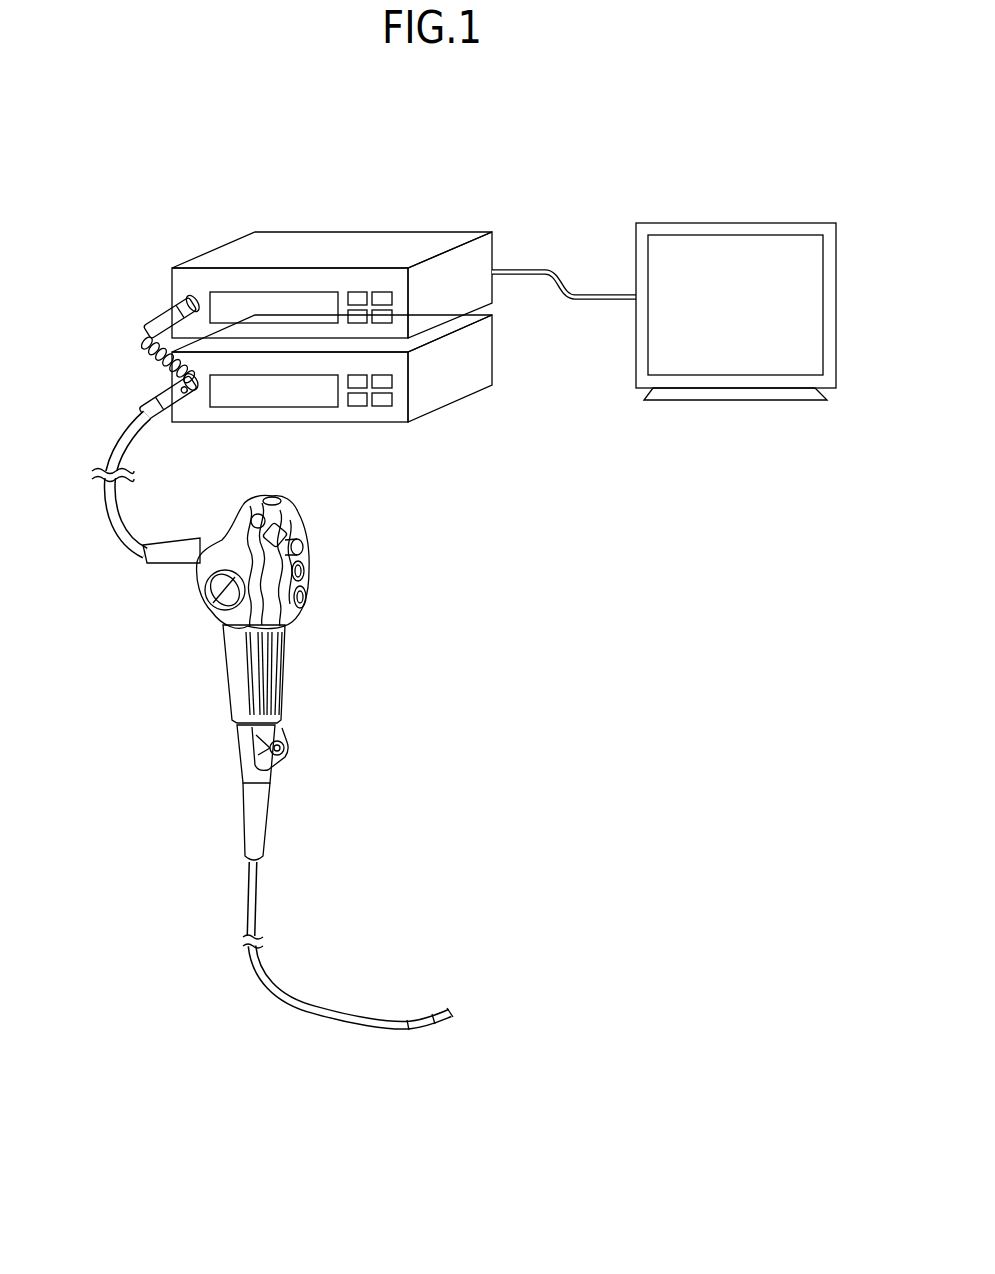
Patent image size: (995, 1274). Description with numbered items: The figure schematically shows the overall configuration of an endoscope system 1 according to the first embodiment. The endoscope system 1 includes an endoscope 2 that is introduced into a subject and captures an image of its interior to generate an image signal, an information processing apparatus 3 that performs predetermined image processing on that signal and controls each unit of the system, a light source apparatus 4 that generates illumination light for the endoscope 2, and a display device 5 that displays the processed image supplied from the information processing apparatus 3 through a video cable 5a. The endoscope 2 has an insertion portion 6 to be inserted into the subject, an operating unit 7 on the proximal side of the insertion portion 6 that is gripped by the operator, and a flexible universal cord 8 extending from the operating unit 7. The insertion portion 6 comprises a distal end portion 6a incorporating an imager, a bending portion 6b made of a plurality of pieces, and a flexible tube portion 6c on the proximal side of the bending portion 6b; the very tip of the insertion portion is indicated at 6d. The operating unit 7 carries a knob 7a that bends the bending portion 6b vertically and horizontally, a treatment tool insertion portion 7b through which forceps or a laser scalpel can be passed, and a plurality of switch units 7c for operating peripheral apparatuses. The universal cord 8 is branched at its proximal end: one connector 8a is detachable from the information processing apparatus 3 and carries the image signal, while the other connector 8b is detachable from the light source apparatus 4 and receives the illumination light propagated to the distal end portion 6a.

The endoscope system 1 is at (780, 150).
The endoscope 2 is at (402, 628).
The information processing apparatus 3 is at (485, 350).
The light source apparatus 4 is at (467, 229).
The display device 5 is at (737, 231).
The video cable 5a is at (545, 269).
The insertion portion 6 is at (450, 1090).
The distal end portion 6a is at (441, 1020).
The bending portion 6b is at (420, 1024).
The flexible tube portion 6c is at (297, 1007).
The distal end face 6d is at (451, 1015).
The operating unit 7 is at (303, 587).
The knob 7a is at (204, 612).
The treatment tool insertion portion 7b is at (288, 743).
The switch units 7c is at (285, 492).
The universal cord 8 is at (105, 503).
The connector 8a is at (158, 382).
The connector 8b is at (163, 295).